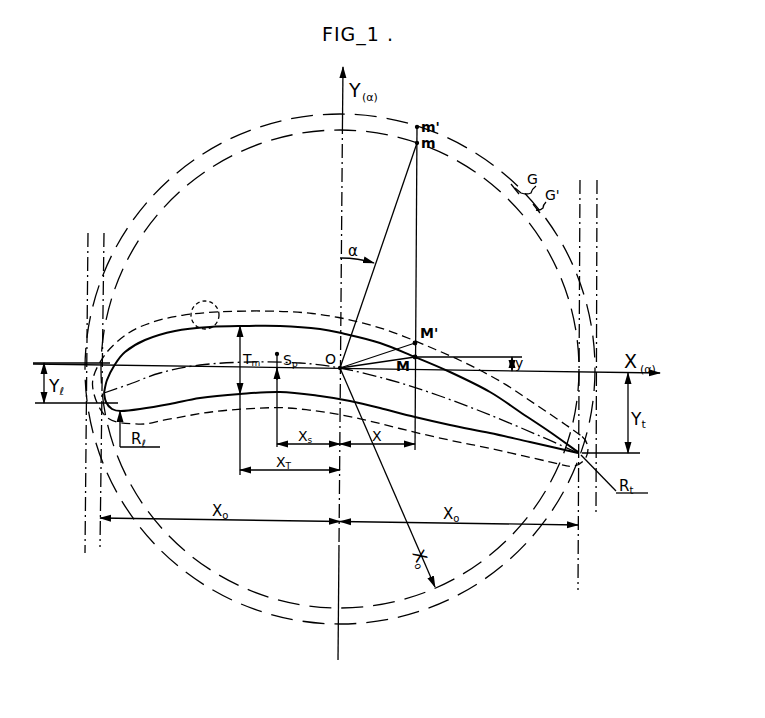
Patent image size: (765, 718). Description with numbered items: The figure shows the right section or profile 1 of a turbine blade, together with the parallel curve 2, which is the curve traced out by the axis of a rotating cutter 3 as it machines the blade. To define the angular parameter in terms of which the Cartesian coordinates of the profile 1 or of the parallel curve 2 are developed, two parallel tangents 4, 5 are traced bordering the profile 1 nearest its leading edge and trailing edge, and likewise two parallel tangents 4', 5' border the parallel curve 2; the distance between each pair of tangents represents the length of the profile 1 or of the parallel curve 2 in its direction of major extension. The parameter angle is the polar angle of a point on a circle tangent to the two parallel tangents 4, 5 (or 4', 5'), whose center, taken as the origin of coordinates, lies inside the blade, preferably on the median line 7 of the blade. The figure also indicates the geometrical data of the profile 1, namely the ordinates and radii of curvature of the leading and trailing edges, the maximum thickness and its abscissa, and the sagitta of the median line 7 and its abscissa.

The profile 1 is at (512, 404).
The parallel curve 2 is at (531, 406).
The rotating cutter 3 is at (209, 307).
The tangent 4 is at (83, 390).
The tangent 4' is at (75, 393).
The tangent 5 is at (595, 385).
The tangent 5' is at (606, 346).
The median line 7 is at (526, 428).